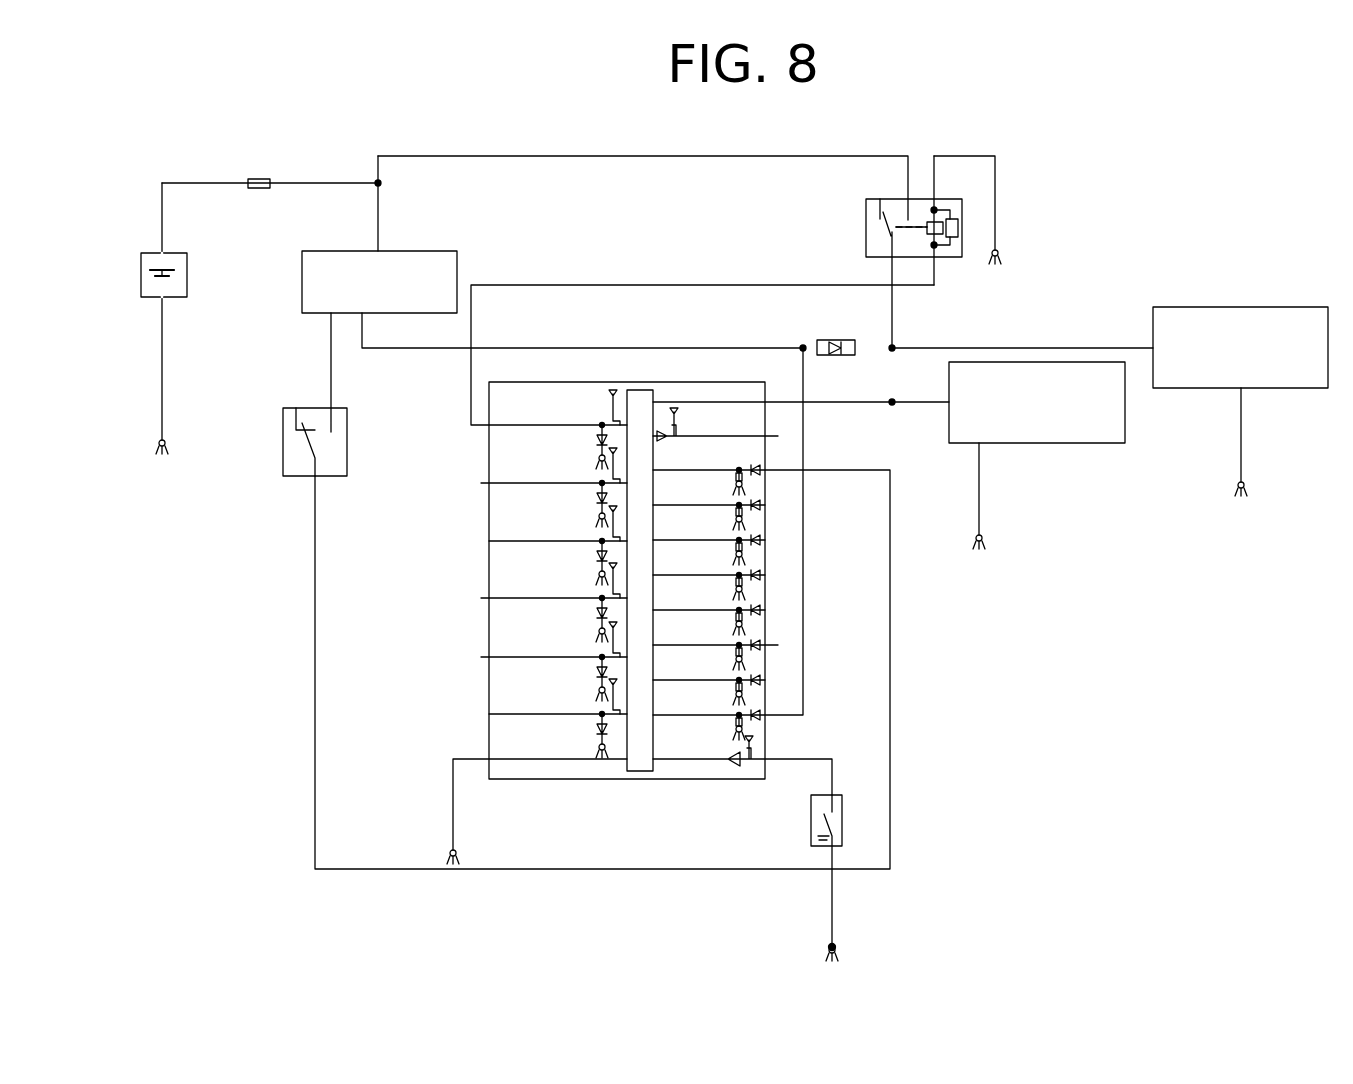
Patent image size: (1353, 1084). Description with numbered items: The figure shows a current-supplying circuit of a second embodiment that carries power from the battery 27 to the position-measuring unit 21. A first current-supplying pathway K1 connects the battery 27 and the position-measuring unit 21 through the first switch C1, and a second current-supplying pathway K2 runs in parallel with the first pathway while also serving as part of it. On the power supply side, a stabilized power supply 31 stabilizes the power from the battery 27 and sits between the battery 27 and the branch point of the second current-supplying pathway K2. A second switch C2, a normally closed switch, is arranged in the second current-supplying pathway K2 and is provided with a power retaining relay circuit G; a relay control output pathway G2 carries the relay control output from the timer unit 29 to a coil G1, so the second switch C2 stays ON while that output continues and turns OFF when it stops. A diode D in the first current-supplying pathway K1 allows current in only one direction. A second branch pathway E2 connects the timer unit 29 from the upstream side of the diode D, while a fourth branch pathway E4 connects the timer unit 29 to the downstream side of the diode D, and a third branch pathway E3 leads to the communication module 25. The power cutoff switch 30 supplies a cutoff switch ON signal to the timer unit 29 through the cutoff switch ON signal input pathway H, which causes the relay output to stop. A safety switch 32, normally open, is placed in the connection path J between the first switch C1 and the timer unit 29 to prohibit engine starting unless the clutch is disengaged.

The stabilized power supply 31 is at (270, 176).
The battery 27 is at (187, 275).
The first current-supplying pathway K1 is at (378, 205).
The second current-supplying pathway K2 is at (692, 156).
The first switch C1 is at (457, 251).
The relay control output pathway G2 is at (643, 283).
The second switch C2 is at (880, 225).
The power retaining relay circuit G is at (950, 257).
The coil G1 is at (928, 240).
The diode D is at (820, 340).
The third branch pathway E3 is at (1107, 345).
The fourth branch pathway E4 is at (820, 400).
The second branch pathway E2 is at (805, 447).
The safety switch 32 is at (347, 440).
The connection path J is at (316, 770).
The timer unit 29 is at (580, 782).
The cutoff switch ON signal input pathway H is at (808, 757).
The power cutoff switch 30 is at (843, 815).
The position-measuring unit 21 is at (1080, 445).
The communication module 25 is at (1285, 390).